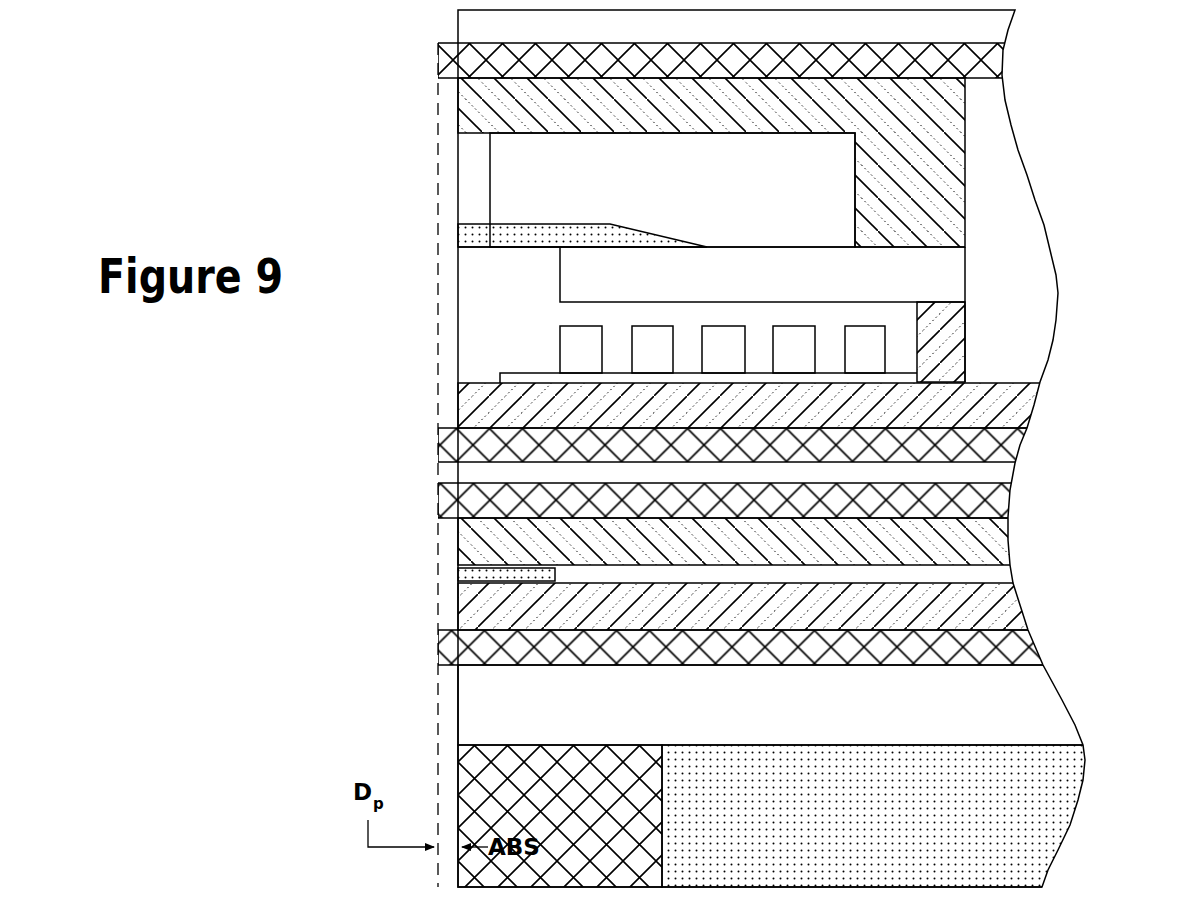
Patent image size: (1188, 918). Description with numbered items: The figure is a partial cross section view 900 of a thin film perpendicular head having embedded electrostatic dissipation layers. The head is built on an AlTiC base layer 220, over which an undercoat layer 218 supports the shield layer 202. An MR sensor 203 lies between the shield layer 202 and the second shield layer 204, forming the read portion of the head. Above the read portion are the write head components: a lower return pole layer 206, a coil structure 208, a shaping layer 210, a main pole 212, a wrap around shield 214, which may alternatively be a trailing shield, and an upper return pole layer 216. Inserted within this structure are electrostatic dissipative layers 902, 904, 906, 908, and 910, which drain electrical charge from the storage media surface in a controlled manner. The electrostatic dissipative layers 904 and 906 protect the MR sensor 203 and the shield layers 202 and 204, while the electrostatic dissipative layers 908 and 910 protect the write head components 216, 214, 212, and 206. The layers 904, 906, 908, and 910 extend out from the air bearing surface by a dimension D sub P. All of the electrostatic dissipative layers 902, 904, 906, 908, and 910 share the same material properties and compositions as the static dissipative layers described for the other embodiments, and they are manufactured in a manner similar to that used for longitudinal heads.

The partial cross section view 900 is at (1065, 123).
The electrostatic dissipative layer 902 is at (583, 801).
The electrostatic dissipative layer 904 is at (438, 647).
The electrostatic dissipative layer 906 is at (438, 503).
The electrostatic dissipative layer 908 is at (438, 447).
The electrostatic dissipative layer 910 is at (457, 77).
The shield layer 202 is at (660, 621).
The MR sensor 203 is at (458, 573).
The shield layer 204 is at (660, 554).
The lower return pole layer 206 is at (648, 421).
The coil structure 208 is at (565, 350).
The shaping layer 210 is at (825, 286).
The main pole 212 is at (622, 230).
The wrap around shield 214 is at (473, 178).
The upper return pole layer 216 is at (731, 116).
The undercoat layer 218 is at (711, 706).
The AlTiC base layer 220 is at (865, 821).